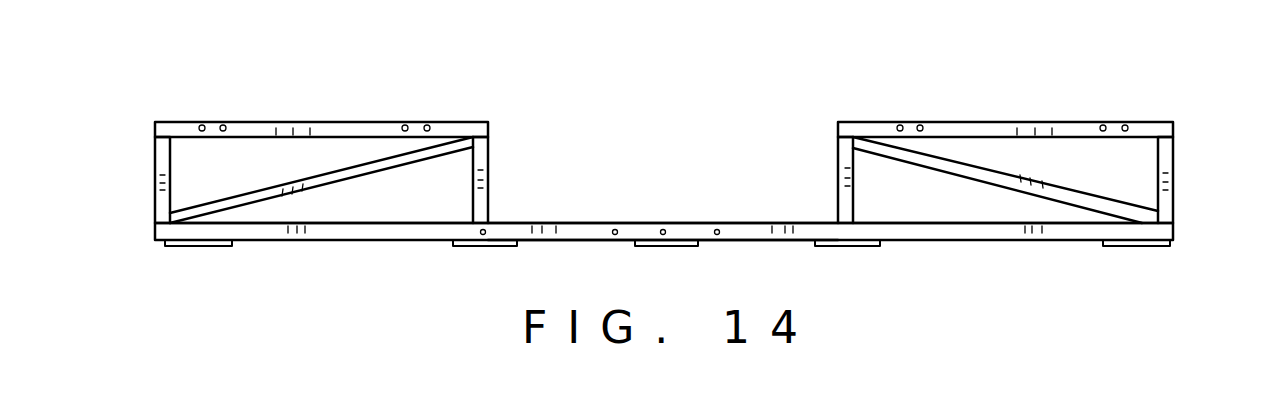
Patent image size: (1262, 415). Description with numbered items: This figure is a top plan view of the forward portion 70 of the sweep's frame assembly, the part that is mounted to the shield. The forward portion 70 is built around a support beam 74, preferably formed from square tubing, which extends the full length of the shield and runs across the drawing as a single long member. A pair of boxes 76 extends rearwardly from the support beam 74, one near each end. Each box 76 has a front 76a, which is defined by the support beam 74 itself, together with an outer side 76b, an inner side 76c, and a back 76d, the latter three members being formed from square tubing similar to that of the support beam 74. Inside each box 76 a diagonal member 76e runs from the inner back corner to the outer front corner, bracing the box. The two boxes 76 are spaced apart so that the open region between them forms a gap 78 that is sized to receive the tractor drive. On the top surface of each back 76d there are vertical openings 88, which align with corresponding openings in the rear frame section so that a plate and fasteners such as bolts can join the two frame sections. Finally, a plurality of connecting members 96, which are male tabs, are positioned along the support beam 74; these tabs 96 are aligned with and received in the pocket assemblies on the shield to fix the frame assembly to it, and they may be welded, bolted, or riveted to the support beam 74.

The forward portion 70 is at (610, 69).
The support beam 74 is at (742, 223).
The boxes 76 is at (337, 119).
The front 76a is at (356, 223).
The outer side 76b is at (155, 190).
The inner side 76c is at (488, 188).
The back 76d is at (276, 122).
The diagonal member 76e is at (1028, 184).
The gap 78 is at (642, 148).
The vertical openings 88 is at (223, 125).
The connecting members 96 is at (215, 246).